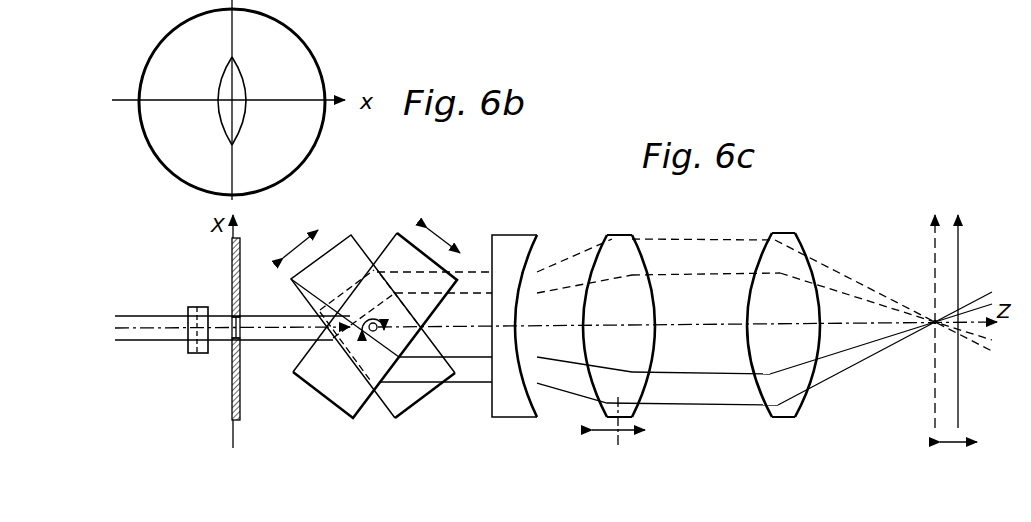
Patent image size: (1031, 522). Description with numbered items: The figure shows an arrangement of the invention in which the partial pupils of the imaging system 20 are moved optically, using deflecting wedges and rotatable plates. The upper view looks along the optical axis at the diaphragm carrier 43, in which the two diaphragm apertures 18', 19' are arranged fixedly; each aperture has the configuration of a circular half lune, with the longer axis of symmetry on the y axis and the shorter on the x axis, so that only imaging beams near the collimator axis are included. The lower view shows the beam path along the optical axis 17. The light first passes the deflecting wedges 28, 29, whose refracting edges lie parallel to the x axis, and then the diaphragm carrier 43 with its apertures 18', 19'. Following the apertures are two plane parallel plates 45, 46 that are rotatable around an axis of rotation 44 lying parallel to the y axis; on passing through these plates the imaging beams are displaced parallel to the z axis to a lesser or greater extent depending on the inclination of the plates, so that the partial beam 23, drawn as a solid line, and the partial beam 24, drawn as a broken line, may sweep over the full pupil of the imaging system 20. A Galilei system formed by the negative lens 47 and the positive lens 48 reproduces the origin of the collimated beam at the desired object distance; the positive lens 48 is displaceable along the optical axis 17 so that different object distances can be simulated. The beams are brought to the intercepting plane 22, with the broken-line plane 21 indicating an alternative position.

In FIG. 6C, the optical axis 17 is at (876, 325).
In FIG. 6B, the diaphragm aperture 18' is at (161, 101).
In FIG. 6C, the diaphragm aperture 18' is at (185, 306).
In FIG. 6B, the diaphragm aperture 19' is at (168, 101).
In FIG. 6C, the diaphragm aperture 19' is at (203, 306).
In FIG. 6C, the imaging system 20 is at (780, 238).
In FIG. 6C, the image plane (alternate position) 21 is at (933, 252).
In FIG. 6C, the intercepting plane 22 is at (960, 252).
In FIG. 6C, the partial beam 23 is at (700, 392).
In FIG. 6C, the partial beam 24 is at (693, 258).
In FIG. 6C, the deflecting wedge 28 is at (190, 353).
In FIG. 6C, the deflecting wedge 29 is at (189, 355).
In FIG. 6B, the diaphragm carrier 43 is at (180, 155).
In FIG. 6C, the diaphragm carrier 43 is at (231, 250).
In FIG. 6B, the axis of rotation 44 is at (367, 20).
In FIG. 6C, the axis of rotation 44 is at (373, 320).
In FIG. 6C, the plane parallel plate 45 is at (415, 388).
In FIG. 6C, the plane parallel plate 46 is at (325, 383).
In FIG. 6C, the negative lens 47 is at (508, 250).
In FIG. 6C, the positive lens 48 is at (614, 240).